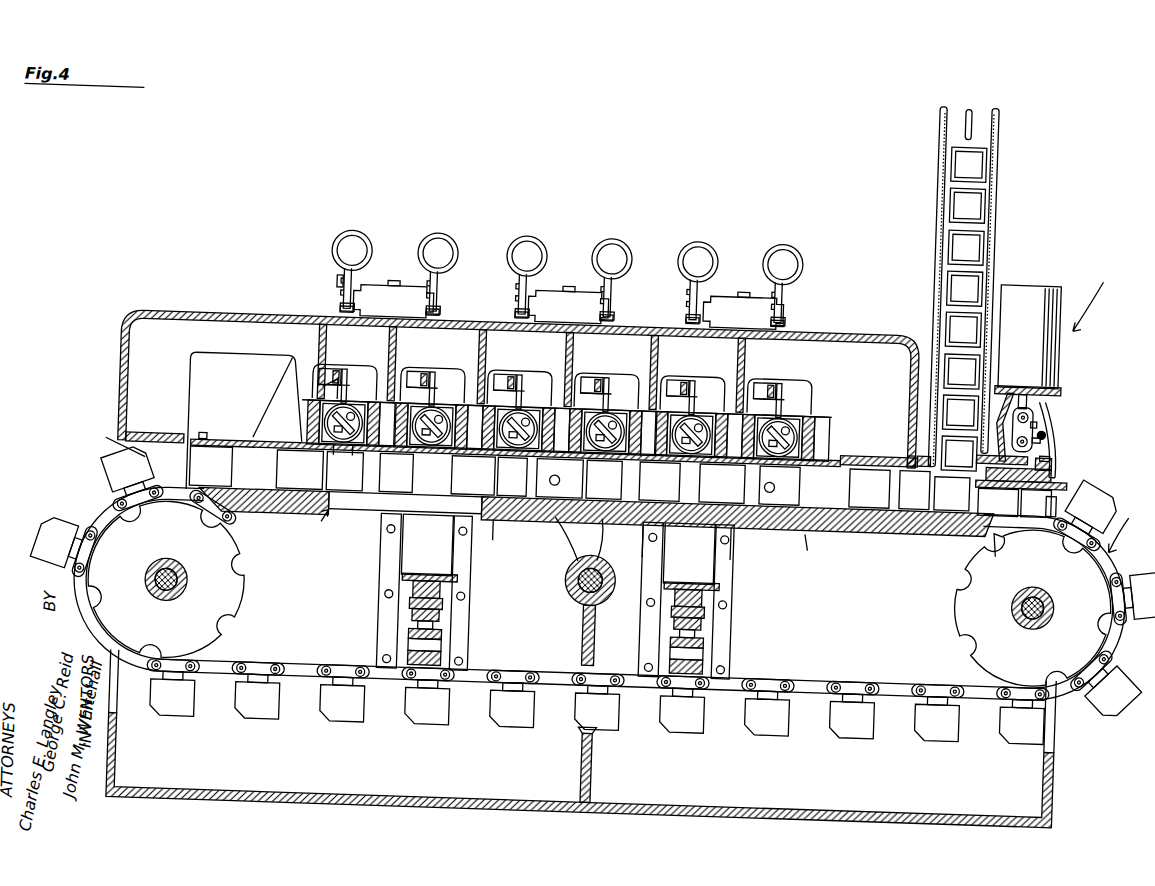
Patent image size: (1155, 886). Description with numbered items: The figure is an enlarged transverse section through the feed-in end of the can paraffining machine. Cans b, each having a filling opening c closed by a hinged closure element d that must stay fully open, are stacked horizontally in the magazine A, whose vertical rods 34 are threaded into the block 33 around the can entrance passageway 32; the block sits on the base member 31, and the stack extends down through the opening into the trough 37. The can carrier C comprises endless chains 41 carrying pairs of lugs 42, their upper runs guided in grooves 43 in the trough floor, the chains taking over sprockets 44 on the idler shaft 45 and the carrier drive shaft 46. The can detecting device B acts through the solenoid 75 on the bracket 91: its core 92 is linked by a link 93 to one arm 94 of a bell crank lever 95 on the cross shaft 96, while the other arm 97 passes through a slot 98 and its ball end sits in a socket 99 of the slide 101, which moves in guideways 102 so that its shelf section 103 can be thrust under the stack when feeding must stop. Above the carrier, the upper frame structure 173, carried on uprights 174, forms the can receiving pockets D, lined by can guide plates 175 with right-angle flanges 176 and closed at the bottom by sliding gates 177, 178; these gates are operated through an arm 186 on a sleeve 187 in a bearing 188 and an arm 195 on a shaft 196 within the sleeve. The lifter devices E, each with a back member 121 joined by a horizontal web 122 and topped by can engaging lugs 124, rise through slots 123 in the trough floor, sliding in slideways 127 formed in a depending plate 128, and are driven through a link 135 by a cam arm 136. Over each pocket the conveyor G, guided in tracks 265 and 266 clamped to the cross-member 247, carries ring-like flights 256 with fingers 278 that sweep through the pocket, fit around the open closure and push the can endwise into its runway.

The upper frame structure 173 is at (186, 310).
The uprights 174 is at (905, 440).
The can guide plates 175 is at (335, 436).
The top right-angle flanges 176 is at (335, 396).
The cross-member 247 is at (252, 398).
The ring-like flights 256 is at (340, 230).
The track 265 is at (345, 362).
The track 266 is at (428, 293).
The finger 278 is at (342, 280).
The conveyor G is at (350, 365).
The can receiving pockets D is at (641, 396).
The filling and dispensing opening c is at (332, 471).
The hinged closure element d is at (352, 471).
The can b is at (982, 165).
The gate 177 is at (677, 483).
The gate 178 is at (682, 483).
The can entrance passageway 32 is at (914, 428).
The block 33 is at (922, 434).
The trough 37 is at (824, 502).
The endless chains 41 is at (1118, 530).
The lugs 42 is at (590, 594).
The grooves 43 is at (1003, 528).
The can carrier C is at (1125, 528).
The sprockets 44 is at (982, 586).
The idler shaft 45 is at (1044, 570).
The carrier drive shaft 46 is at (185, 572).
The base member 31 is at (1070, 790).
The can engaging lugs 124 is at (352, 508).
The slots 123 is at (563, 536).
The depending plate 128 is at (392, 567).
The back member 121 is at (418, 541).
The connecting horizontal web 122 is at (470, 562).
The lifter devices E is at (452, 563).
The link 135 is at (419, 609).
The slideways 127 is at (466, 617).
The cam arm 136 is at (419, 626).
The arm 186 is at (640, 512).
The shaft 196 is at (588, 566).
The arm 195 is at (578, 535).
The sleeve 187 is at (590, 578).
The bearing 188 is at (594, 596).
The magazine A is at (1008, 185).
The rods 34 is at (993, 98).
The solenoid 75 is at (1050, 268).
The can detecting device B is at (1094, 297).
The core 92 is at (1021, 365).
The bracket 91 is at (1036, 384).
The link 93 is at (1036, 396).
The arm 94 is at (1040, 396).
The cross shaft 96 is at (1049, 404).
The bell crank lever 95 is at (1044, 411).
The arm 97 is at (1054, 428).
The slot 98 is at (1060, 438).
The guideways 102 is at (1070, 455).
The shelf section 103 is at (997, 502).
The slide 101 is at (1036, 504).
The socket 99 is at (1054, 509).